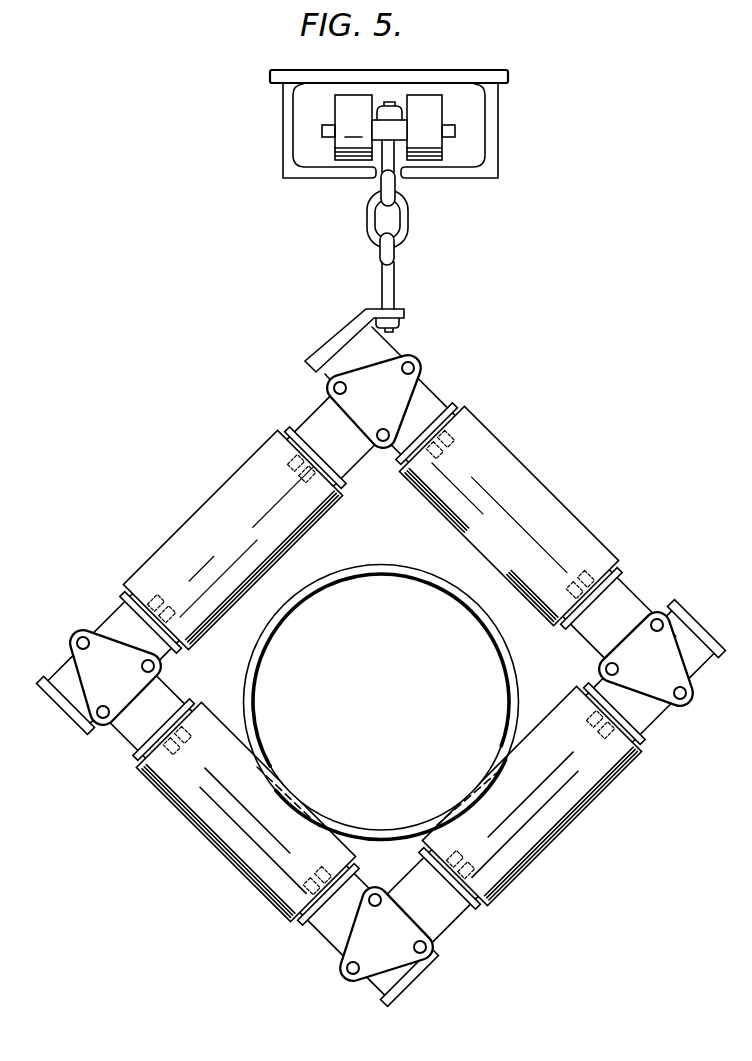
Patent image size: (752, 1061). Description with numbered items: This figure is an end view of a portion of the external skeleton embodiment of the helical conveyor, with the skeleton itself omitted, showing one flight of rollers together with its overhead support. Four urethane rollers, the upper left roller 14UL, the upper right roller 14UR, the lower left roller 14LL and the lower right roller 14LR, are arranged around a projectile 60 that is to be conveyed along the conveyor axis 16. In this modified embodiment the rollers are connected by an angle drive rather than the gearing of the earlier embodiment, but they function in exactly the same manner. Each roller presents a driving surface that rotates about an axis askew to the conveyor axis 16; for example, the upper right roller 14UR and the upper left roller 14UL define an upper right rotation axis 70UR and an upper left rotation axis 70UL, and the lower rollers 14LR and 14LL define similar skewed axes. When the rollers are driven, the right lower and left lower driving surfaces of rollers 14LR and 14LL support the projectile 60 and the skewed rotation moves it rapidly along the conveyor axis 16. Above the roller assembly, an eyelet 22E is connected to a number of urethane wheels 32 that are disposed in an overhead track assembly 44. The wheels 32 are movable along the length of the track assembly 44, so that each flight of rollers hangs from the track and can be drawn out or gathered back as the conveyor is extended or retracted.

The track assembly 44 is at (499, 150).
The urethane wheels 32 is at (354, 164).
The eyelet 22E is at (374, 254).
The upper left roller 14UL is at (207, 506).
The upper right roller 14UR is at (589, 540).
The lower left roller 14LL is at (201, 836).
The lower right roller 14LR is at (553, 838).
The upper left rotation axis 70UL is at (262, 567).
The upper right rotation axis 70UR is at (481, 545).
The projectiles 60 is at (400, 566).
The conveyor axis 16 is at (380, 671).